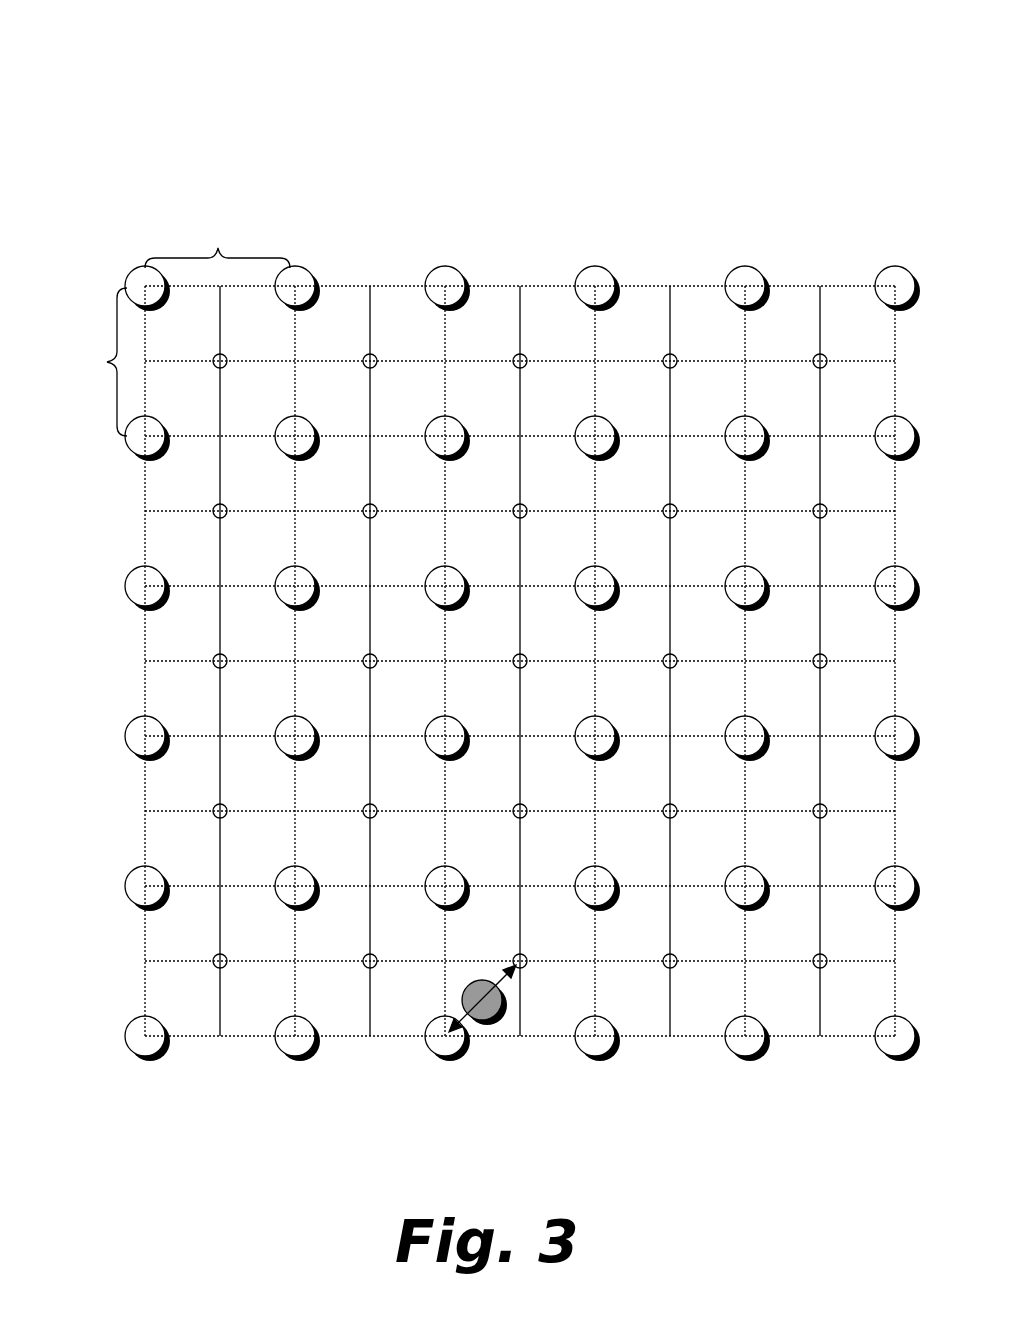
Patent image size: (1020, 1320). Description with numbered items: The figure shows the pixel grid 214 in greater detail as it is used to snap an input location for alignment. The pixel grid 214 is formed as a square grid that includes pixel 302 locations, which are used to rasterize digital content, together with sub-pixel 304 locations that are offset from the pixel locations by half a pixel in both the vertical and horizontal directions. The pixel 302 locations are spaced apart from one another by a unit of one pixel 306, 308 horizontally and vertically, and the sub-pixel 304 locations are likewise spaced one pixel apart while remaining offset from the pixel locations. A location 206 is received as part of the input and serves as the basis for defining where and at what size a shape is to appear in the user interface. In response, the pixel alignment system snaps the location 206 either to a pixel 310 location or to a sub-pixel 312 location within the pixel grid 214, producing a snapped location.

The pixel grid 214 is at (163, 91).
The pixel 302 is at (446, 266).
The sub-pixel 304 is at (672, 353).
The one pixel 306 is at (196, 239).
The one pixel 308 is at (43, 402).
The pixel location 310 is at (453, 1033).
The sub-pixel location 312 is at (522, 970).
The location 206 is at (480, 1018).